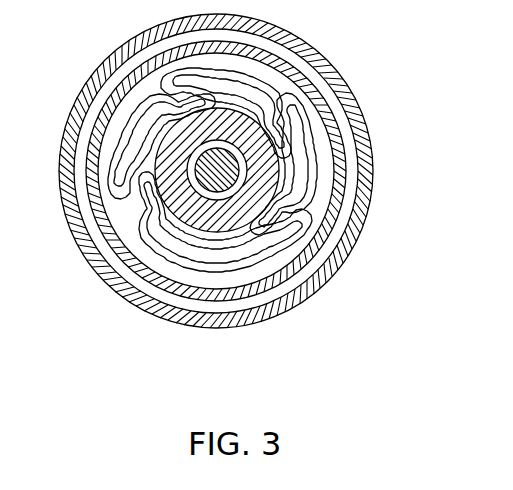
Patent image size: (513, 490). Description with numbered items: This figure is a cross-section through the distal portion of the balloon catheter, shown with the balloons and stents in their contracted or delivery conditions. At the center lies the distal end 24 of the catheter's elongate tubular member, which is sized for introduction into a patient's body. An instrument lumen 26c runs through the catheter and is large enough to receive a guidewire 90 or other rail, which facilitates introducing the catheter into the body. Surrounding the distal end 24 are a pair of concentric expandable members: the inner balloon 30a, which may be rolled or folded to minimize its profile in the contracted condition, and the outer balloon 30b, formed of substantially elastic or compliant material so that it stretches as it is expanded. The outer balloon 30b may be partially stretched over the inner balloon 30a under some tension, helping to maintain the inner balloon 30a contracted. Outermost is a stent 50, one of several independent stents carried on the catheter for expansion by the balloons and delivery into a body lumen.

The distal end 24 is at (190, 222).
The instrument lumen 26c is at (168, 208).
The inner balloon 30a is at (313, 117).
The outer balloon 30b is at (348, 148).
The stent 50 is at (377, 196).
The guidewire 90 is at (222, 178).